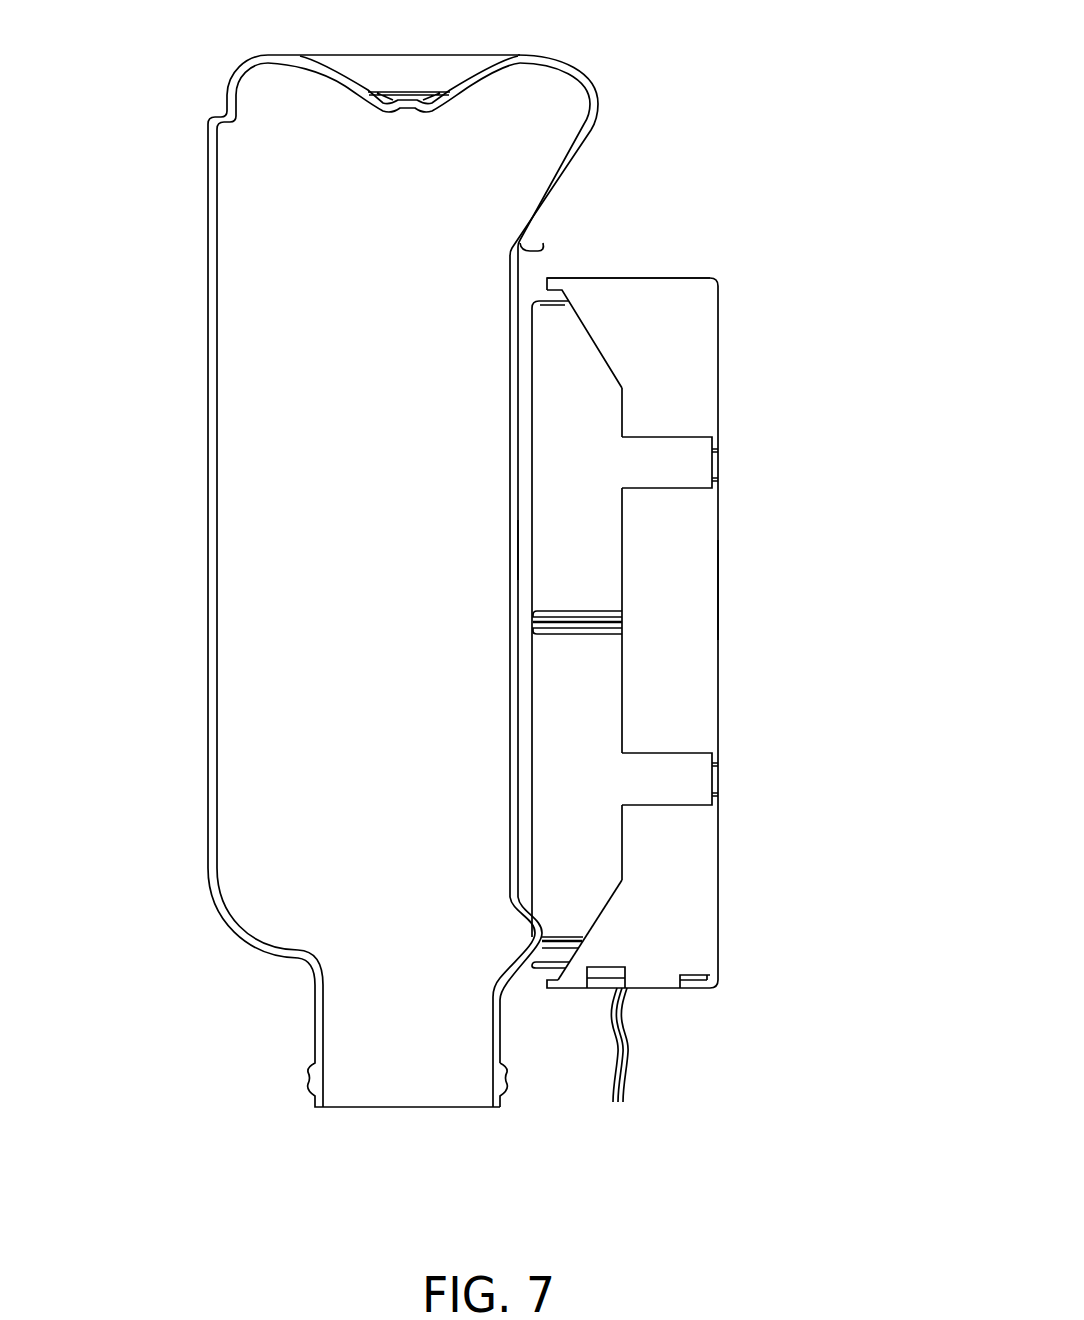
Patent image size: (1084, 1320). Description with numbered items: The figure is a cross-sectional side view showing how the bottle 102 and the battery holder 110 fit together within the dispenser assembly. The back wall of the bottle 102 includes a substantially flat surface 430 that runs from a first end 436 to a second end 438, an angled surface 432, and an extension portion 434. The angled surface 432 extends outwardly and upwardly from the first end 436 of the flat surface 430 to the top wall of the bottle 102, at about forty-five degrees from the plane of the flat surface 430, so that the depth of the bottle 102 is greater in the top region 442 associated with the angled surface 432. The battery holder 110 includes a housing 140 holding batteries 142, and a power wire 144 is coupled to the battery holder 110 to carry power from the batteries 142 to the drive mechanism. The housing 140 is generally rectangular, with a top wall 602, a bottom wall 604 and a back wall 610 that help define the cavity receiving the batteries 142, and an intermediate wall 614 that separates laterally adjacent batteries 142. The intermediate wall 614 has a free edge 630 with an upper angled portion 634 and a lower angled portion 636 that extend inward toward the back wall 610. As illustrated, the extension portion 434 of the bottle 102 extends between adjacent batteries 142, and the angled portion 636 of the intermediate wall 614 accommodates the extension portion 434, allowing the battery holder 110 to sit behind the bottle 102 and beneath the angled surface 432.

The bottle 102 is at (233, 82).
The top region 442 is at (548, 64).
The angled surface 432 is at (597, 90).
The first end 436 is at (540, 249).
The angled portion 634 is at (579, 318).
The top wall 602 is at (652, 277).
The battery holder 110 is at (698, 332).
The free edge 630 is at (623, 408).
The batteries 142 is at (598, 484).
The flat surface 430 is at (518, 550).
The back wall 610 is at (718, 590).
The intermediate wall 614 is at (693, 625).
The housing 140 is at (708, 848).
The second end 438 is at (518, 903).
The angled portion 636 is at (602, 913).
The bottom wall 604 is at (685, 992).
The extension portion 434 is at (507, 948).
The power wire 144 is at (628, 1073).